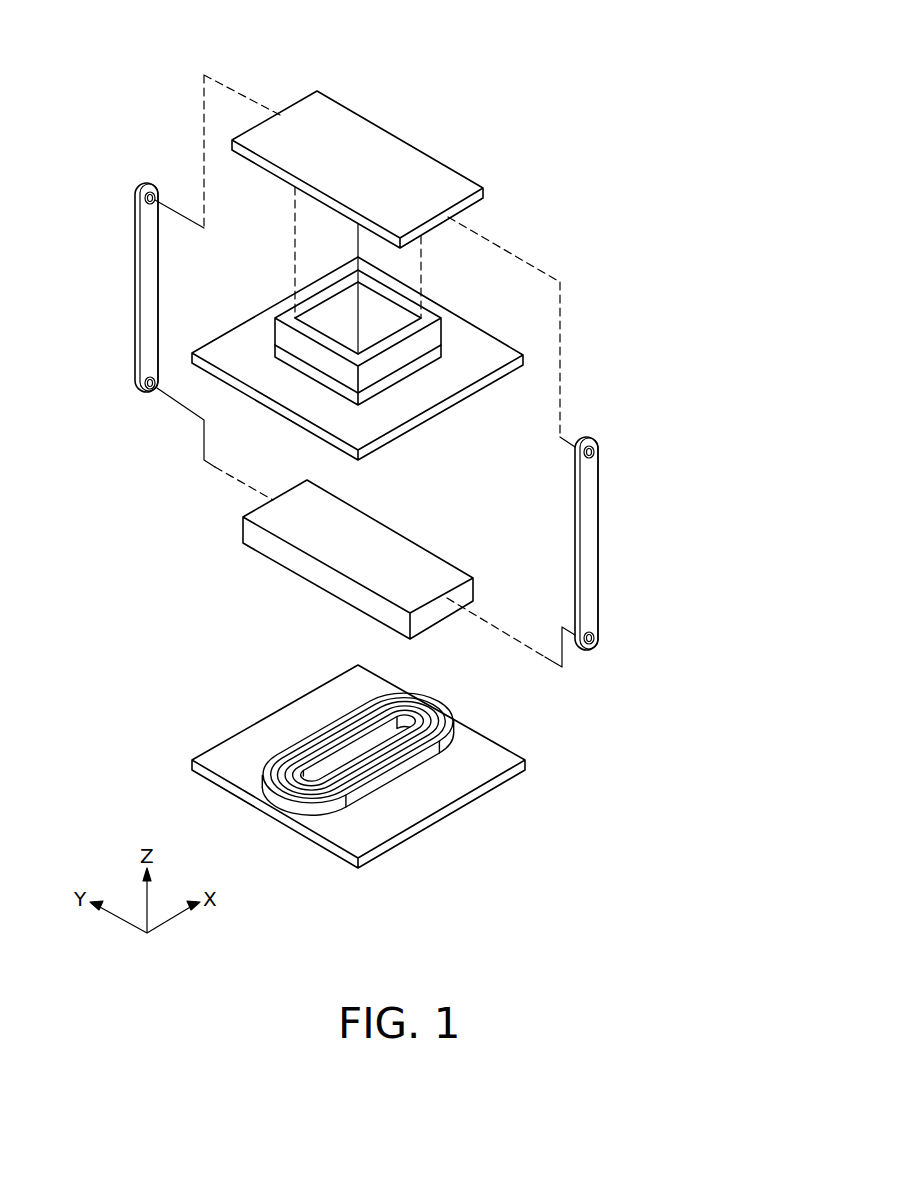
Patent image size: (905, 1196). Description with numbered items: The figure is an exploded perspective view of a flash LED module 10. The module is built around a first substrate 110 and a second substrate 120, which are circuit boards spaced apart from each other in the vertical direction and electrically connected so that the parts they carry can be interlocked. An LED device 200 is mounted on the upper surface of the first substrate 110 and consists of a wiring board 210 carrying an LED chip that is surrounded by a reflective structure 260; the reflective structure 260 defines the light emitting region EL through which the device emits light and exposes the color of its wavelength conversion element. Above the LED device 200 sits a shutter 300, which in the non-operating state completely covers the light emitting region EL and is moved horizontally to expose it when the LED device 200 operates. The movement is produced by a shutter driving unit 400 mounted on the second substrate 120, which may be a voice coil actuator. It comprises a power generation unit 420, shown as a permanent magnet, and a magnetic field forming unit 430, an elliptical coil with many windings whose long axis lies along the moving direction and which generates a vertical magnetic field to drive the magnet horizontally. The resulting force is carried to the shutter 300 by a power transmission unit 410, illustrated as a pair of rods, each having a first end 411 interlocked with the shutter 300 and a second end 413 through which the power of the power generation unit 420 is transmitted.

The flash LED module 10 is at (170, 38).
The shutter 300 is at (400, 169).
The LED device 200 is at (372, 353).
The first substrate 110 is at (416, 358).
The wiring board 210 is at (259, 369).
The reflective structure 260 is at (259, 331).
The light emitting region EL is at (255, 300).
The shutter driving unit 400 is at (424, 499).
The power transmission unit 410 is at (390, 416).
The first end 411 is at (114, 200).
The second end 413 is at (112, 390).
The power generation unit 420 is at (476, 559).
The magnetic field forming unit 430 is at (486, 698).
The second substrate 120 is at (426, 766).